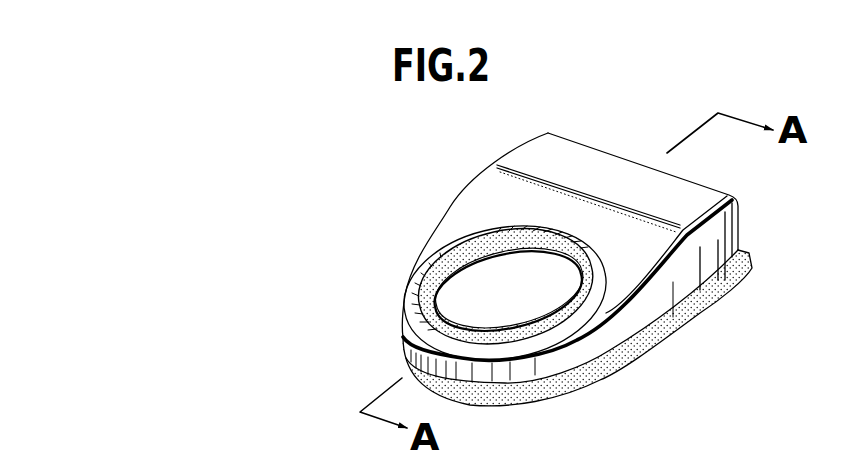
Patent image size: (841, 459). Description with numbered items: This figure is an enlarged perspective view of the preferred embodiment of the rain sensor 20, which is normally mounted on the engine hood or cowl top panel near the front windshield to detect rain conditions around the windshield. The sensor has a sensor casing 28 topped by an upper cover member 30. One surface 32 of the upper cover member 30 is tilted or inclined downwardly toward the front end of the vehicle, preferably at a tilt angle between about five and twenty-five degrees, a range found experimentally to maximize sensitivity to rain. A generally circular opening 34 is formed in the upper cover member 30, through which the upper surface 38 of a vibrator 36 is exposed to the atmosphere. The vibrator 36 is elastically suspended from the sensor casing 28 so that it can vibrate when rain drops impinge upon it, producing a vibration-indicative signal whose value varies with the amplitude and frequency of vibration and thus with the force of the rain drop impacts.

The rain sensor 20 is at (553, 126).
The sensor casing 28 is at (646, 156).
The upper cover member 30 is at (450, 212).
The inclined surface 32 is at (623, 292).
The circular opening 34 is at (472, 328).
The vibrator 36 is at (458, 281).
The upper surface of vibrator 38 is at (460, 266).